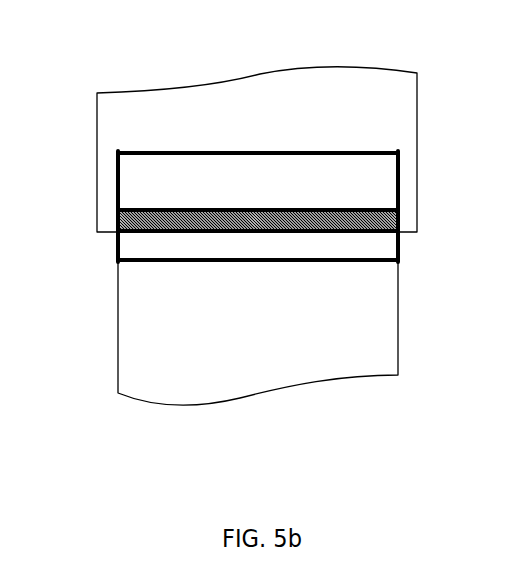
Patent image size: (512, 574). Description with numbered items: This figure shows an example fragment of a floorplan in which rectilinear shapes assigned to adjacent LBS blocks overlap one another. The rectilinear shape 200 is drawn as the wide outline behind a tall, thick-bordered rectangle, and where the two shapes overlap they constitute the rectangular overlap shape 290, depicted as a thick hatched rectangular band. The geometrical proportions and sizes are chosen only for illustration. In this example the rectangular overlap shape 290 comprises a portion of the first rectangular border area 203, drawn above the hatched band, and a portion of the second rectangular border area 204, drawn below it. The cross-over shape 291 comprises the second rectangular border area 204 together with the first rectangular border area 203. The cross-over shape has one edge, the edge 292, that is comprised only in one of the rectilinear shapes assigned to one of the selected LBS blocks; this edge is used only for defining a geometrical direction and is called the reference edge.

The rectilinear shape 200 is at (197, 79).
The first rectangular border area 203 is at (258, 180).
The second rectangular border area 204 is at (230, 455).
The rectangular overlap shape 290 is at (117, 222).
The cross-over shape 291 is at (117, 165).
The edge 292 is at (398, 152).